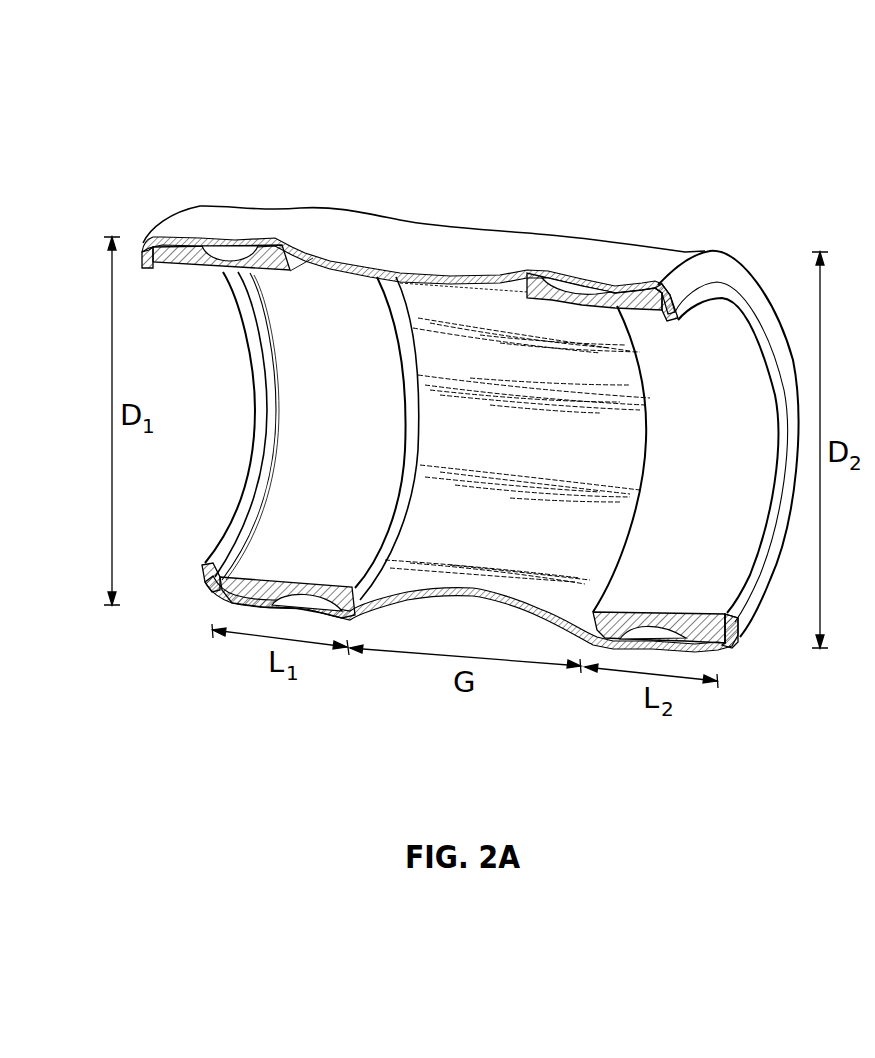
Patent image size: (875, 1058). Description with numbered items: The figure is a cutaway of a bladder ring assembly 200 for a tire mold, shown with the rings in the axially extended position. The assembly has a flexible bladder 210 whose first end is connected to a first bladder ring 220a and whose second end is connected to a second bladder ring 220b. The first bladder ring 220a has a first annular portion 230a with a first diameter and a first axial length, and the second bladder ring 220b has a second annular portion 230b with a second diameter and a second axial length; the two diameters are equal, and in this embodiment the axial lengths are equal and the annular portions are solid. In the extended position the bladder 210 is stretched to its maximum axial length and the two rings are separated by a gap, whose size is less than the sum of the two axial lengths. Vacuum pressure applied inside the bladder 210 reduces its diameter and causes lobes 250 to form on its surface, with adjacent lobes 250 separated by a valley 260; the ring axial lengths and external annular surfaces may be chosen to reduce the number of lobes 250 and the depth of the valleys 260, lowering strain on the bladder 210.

The bladder ring assembly 200 is at (621, 43).
The flexible bladder 210 is at (330, 207).
The first bladder ring 220a is at (215, 253).
The second bladder ring 220b is at (645, 298).
The first annular portion 230a is at (370, 425).
The second annular portion 230b is at (742, 457).
The lobes 250 is at (458, 357).
The valley 260 is at (546, 436).